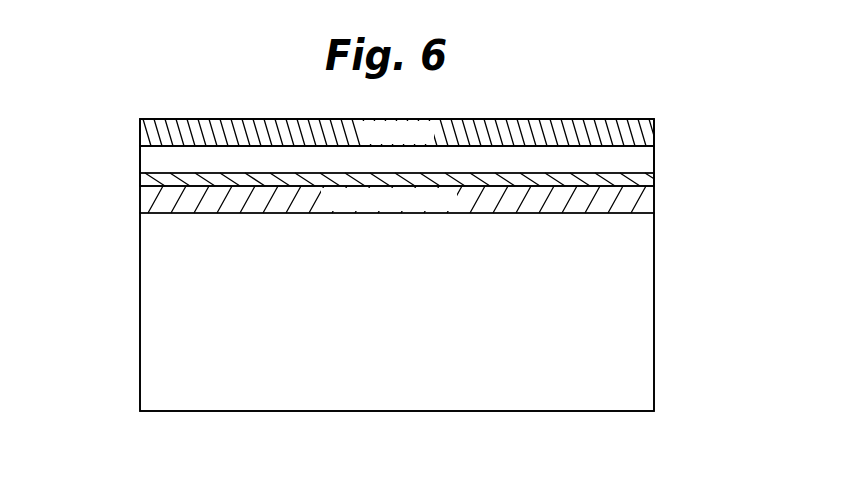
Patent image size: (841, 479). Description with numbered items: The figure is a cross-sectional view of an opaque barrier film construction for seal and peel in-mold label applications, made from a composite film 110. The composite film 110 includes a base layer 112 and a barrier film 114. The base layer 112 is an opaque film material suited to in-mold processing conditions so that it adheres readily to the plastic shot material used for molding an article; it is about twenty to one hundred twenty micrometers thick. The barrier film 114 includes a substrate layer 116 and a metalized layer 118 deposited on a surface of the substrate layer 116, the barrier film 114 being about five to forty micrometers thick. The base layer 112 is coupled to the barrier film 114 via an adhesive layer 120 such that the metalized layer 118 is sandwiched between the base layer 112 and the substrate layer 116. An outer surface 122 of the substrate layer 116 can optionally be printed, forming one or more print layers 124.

The composite film 110 is at (672, 116).
The base layer 112 is at (645, 305).
The barrier film 114 is at (132, 143).
The substrate layer 116 is at (642, 162).
The metalized layer 118 is at (652, 180).
The adhesive layer 120 is at (142, 194).
The outer surface 122 is at (177, 127).
The print layer 124 is at (291, 127).